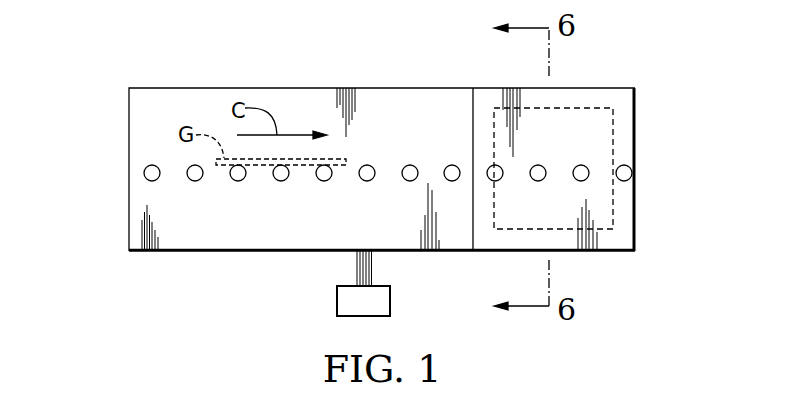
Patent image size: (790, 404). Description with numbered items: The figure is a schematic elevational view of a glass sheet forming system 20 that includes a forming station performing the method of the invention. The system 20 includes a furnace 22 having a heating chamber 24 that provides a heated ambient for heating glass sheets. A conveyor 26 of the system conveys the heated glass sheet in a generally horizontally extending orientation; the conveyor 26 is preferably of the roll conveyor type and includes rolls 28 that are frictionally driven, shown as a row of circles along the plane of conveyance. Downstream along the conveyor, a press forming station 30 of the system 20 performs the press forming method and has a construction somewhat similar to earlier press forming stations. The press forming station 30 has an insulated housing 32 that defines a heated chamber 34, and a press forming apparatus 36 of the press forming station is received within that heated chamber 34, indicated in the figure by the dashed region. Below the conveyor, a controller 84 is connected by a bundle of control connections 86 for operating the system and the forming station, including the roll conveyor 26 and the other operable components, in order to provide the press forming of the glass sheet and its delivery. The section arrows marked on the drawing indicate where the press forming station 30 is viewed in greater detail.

The glass sheet forming system 20 is at (99, 243).
The furnace 22 is at (188, 78).
The heating chamber 24 is at (312, 93).
The conveyor 26 is at (127, 173).
The rolls 28 is at (281, 189).
The press forming station 30 is at (622, 86).
The insulated housing 32 is at (572, 88).
The heated chamber 34 is at (623, 147).
The press forming apparatus 36 is at (627, 209).
The controller 84 is at (390, 298).
The control connections 86 is at (357, 266).